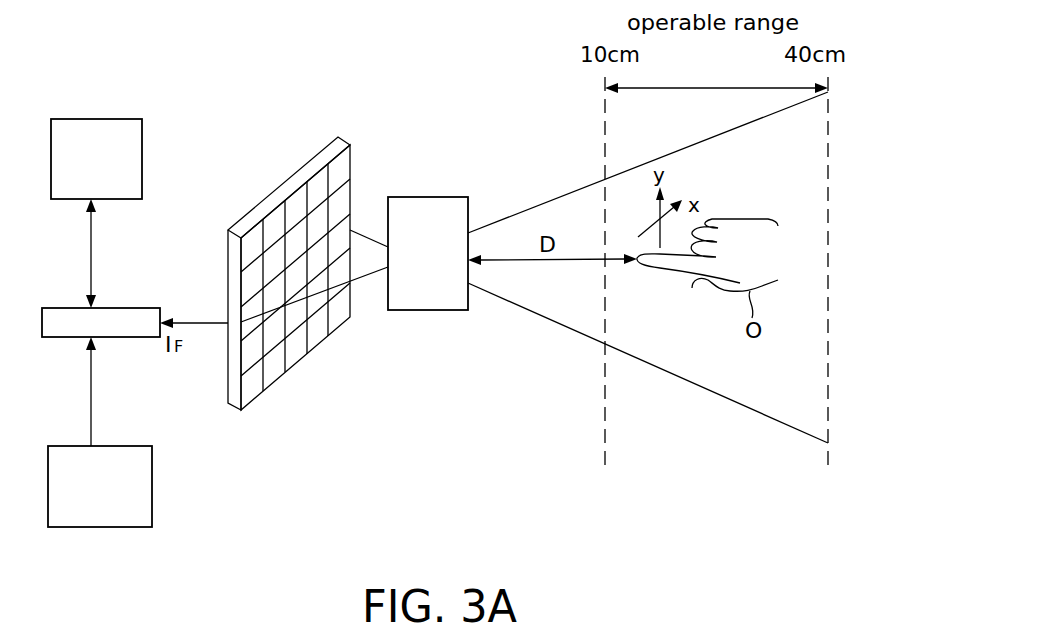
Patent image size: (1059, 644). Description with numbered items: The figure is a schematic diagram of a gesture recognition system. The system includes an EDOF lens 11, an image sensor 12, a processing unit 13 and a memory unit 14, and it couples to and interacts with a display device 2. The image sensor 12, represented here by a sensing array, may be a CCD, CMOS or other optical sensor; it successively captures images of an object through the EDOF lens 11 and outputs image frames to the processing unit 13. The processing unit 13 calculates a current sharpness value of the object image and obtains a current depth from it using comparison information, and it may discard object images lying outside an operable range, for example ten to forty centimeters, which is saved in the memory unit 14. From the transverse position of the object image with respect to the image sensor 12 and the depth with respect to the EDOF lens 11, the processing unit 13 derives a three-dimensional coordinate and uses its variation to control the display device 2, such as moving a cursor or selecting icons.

The display device 2 is at (75, 119).
The EDOF lens 11 is at (468, 199).
The image sensor 12 is at (299, 180).
The processing unit 13 is at (118, 337).
The memory unit 14 is at (104, 527).